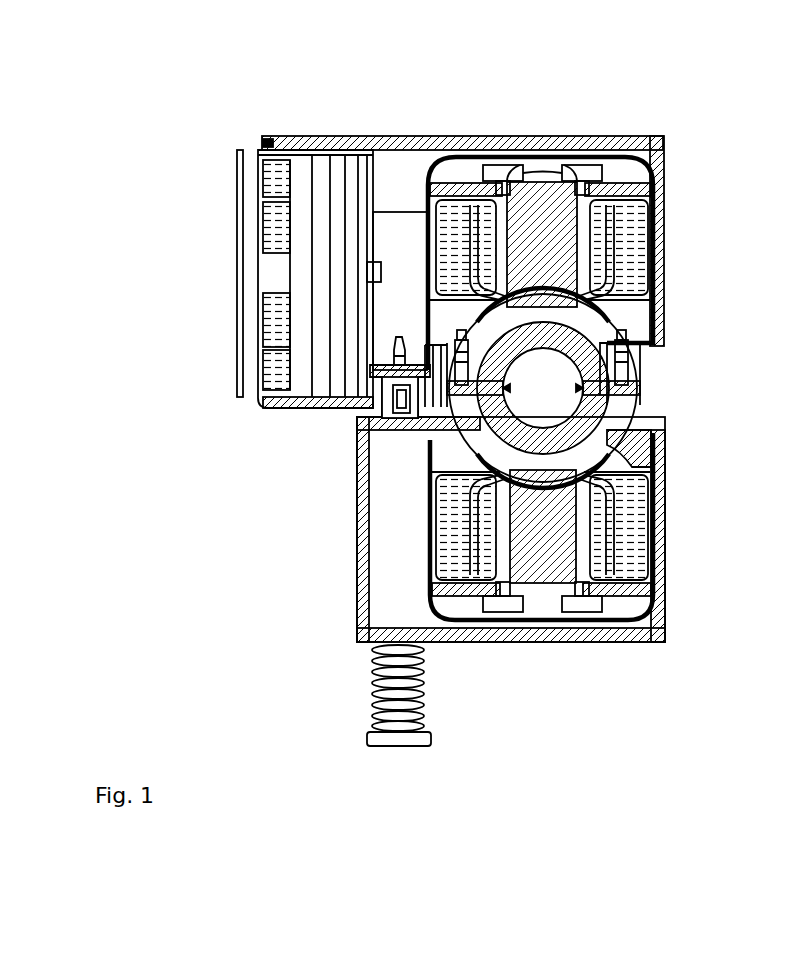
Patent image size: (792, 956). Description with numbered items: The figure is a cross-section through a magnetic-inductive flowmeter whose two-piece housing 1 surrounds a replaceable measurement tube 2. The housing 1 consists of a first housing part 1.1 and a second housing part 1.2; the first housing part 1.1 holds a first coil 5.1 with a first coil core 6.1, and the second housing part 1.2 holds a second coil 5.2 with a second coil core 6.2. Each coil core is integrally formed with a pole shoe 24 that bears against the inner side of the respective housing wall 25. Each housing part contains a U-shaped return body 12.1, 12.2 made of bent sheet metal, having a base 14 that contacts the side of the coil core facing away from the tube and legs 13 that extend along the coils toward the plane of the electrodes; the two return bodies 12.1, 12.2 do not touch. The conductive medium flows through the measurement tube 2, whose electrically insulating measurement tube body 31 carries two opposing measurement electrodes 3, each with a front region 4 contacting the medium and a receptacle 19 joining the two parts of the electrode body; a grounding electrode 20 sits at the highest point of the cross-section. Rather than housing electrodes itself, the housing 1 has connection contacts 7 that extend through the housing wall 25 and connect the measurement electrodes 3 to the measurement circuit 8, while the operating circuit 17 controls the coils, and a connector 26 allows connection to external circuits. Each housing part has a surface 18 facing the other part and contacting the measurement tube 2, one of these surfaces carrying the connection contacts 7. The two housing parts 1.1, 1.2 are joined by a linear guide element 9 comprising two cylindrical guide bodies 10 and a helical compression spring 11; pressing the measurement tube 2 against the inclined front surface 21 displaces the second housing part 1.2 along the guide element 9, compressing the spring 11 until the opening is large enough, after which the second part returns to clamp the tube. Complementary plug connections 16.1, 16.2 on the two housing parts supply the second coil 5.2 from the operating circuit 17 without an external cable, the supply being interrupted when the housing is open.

The housing 1 is at (683, 663).
The first housing part 1.1 is at (258, 136).
The second housing part 1.2 is at (347, 552).
The measurement tube 2 is at (645, 367).
The measurement electrodes 3 is at (375, 373).
The front region 4 is at (660, 498).
The first coil 5.1 is at (633, 205).
The second coil 5.2 is at (465, 513).
The first coil core 6.1 is at (541, 165).
The second coil core 6.2 is at (530, 545).
The connection contacts 7 is at (622, 342).
The measurement circuit 8 is at (412, 266).
The guide element 9 is at (362, 692).
The guide bodies 10 is at (407, 667).
The spring 11 is at (422, 653).
The first return body 12.1 is at (661, 141).
The second return body 12.2 is at (658, 603).
The legs 13 is at (425, 213).
The base 14 is at (590, 148).
The first plug connection 16.1 is at (398, 357).
The second plug connection 16.2 is at (395, 403).
The operating circuit 17 is at (420, 326).
The surface 18 is at (605, 345).
The receptacle 19 is at (637, 393).
The grounding electrode 20 is at (543, 355).
The front surface 21 is at (655, 443).
The pole shoe 24 is at (580, 305).
The housing wall 25 is at (318, 142).
The connector 26 is at (257, 270).
The measurement tube body 31 is at (592, 343).